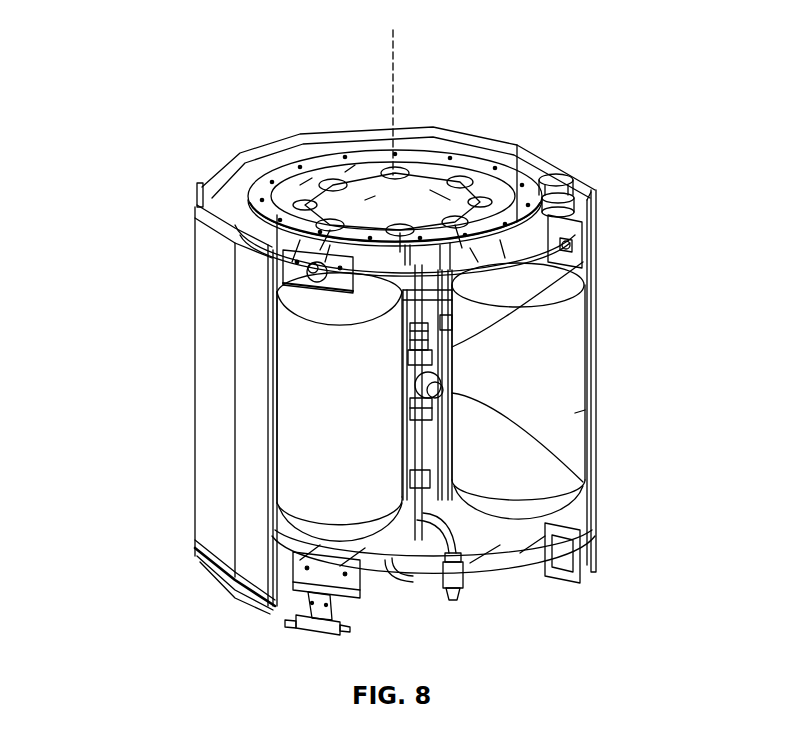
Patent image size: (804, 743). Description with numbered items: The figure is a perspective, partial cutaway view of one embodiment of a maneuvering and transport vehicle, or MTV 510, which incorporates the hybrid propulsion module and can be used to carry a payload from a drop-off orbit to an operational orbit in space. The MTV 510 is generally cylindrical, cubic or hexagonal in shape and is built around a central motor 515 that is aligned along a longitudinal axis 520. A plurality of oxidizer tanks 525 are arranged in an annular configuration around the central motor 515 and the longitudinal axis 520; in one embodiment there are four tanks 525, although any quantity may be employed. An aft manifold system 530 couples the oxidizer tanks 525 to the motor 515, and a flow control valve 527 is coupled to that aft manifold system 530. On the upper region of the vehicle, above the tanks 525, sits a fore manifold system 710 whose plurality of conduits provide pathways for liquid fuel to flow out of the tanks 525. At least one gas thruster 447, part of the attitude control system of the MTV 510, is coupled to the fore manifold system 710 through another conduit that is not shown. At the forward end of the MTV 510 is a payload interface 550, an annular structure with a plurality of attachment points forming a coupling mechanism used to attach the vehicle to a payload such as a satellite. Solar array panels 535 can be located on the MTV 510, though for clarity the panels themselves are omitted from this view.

The maneuvering and transport vehicle (MTV) 510 is at (143, 74).
The longitudinal axis 520 is at (392, 45).
The fore manifold system 710 is at (425, 160).
The payload interface 550 is at (518, 173).
The central motor 515 is at (572, 258).
The solar array panels 535 is at (200, 395).
The oxidizer tanks 525 is at (590, 410).
The flow control valve 527 is at (583, 484).
The aft manifold system 530 is at (418, 576).
The gas thruster 447 is at (308, 627).